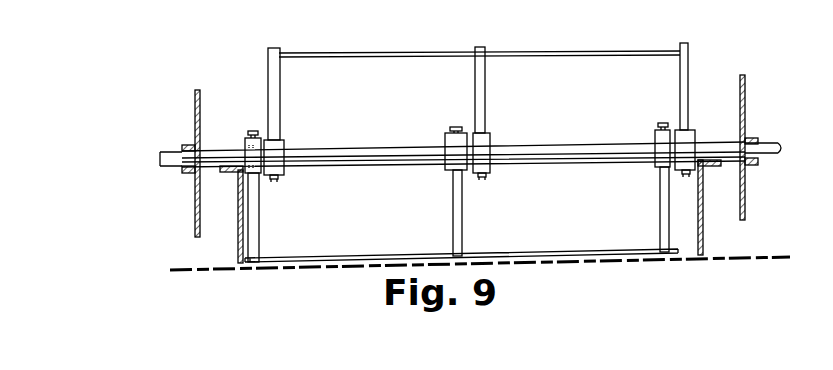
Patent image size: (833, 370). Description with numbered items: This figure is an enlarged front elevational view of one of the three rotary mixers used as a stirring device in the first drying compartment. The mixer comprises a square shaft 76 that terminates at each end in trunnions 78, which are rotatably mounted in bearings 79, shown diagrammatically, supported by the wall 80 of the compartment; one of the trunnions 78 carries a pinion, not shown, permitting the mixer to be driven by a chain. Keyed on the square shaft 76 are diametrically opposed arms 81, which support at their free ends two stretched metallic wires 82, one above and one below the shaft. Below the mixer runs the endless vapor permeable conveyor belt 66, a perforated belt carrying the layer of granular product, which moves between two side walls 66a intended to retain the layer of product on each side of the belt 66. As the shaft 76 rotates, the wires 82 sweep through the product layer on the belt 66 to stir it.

The endless vapor permeable conveyor belt 66 is at (563, 262).
The side wall 66a is at (240, 222).
The square shaft 76 is at (214, 153).
The trunnion 78 is at (169, 150).
The bearing 79 is at (190, 173).
The wall 80 is at (195, 113).
The arm 81 is at (280, 93).
The stretched metallic wire 82 is at (420, 54).